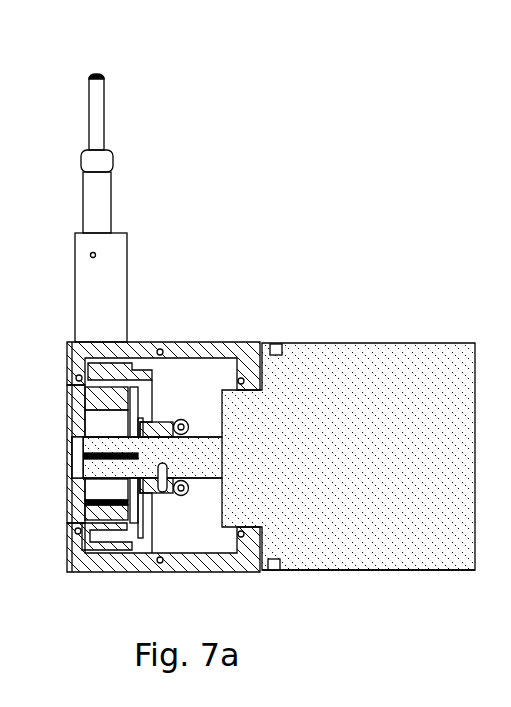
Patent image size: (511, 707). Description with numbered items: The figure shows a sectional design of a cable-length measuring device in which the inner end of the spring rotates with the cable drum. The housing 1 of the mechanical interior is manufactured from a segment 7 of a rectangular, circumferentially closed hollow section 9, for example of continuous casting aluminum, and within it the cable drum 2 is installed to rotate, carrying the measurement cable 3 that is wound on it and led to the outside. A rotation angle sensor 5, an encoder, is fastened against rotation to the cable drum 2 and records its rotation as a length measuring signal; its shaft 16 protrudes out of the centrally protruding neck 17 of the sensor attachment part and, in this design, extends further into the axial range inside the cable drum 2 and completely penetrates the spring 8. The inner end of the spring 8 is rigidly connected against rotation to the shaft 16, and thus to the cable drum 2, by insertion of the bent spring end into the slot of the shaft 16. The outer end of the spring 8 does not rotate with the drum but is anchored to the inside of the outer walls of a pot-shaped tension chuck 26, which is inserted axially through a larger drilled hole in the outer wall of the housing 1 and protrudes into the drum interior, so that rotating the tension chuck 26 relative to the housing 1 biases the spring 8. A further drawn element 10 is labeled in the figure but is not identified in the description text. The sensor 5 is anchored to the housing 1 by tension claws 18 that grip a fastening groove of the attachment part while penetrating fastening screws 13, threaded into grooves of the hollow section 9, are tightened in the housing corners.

The housing 1 is at (80, 574).
The cable drum 2 is at (138, 359).
The measurement cable 3 is at (377, 573).
The rotation angle sensor 5 is at (279, 456).
The segment 7 is at (162, 495).
The spring 8 is at (97, 522).
The hollow section 9 is at (77, 513).
The plate 10 is at (133, 531).
The fastening screws 13 is at (184, 419).
The shaft 16 is at (152, 457).
The neck 17 is at (124, 235).
The tension claws 18 is at (90, 78).
The tension chuck 26 is at (73, 424).